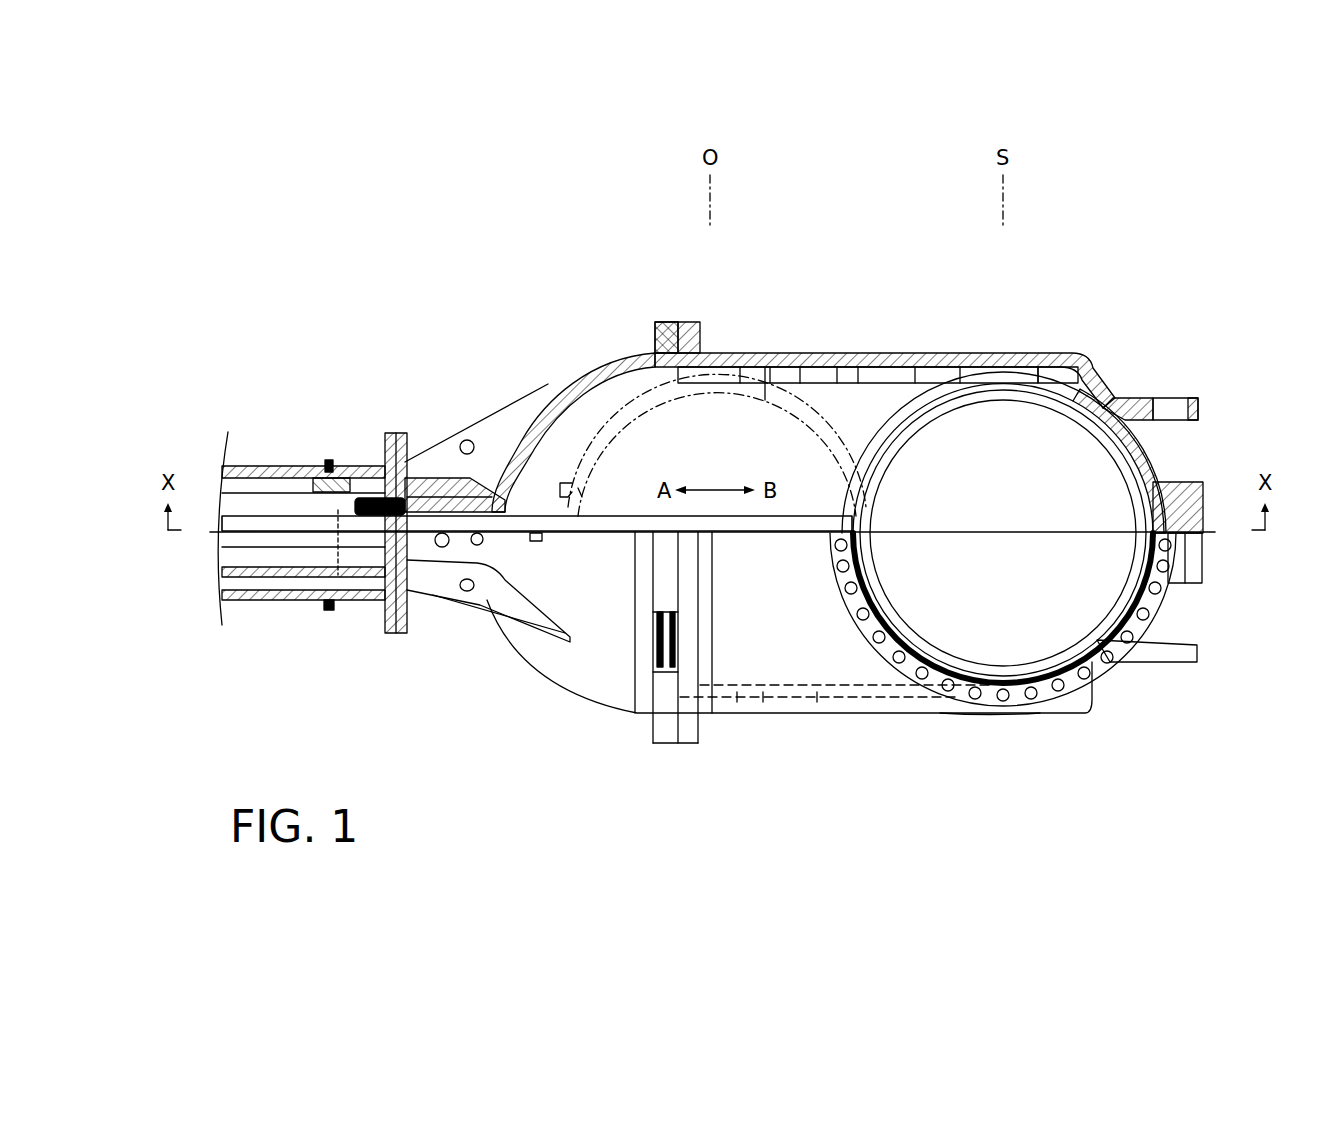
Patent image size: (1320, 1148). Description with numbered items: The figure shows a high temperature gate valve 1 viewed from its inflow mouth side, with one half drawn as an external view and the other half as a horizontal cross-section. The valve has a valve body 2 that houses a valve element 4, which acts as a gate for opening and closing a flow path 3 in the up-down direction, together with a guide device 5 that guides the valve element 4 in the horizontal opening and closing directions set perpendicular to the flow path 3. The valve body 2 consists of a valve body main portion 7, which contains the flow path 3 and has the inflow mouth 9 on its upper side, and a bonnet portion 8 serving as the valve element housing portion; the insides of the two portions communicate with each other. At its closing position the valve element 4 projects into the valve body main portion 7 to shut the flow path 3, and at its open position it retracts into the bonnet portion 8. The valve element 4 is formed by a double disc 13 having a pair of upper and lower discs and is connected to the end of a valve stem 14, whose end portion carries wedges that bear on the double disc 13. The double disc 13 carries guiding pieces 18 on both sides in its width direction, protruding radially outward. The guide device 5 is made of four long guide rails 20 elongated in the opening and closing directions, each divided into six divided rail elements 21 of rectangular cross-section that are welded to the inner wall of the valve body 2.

The high temperature gate valve 1 is at (519, 323).
The valve body 2 is at (1084, 347).
The flow path 3 is at (1013, 599).
The valve element 4 is at (598, 426).
The guide device 5 is at (793, 385).
The valve body main portion 7 is at (912, 355).
The bonnet portion 8 is at (630, 353).
The inflow mouth 9 is at (1055, 635).
The double disc 13 is at (1100, 477).
The valve stem 14 is at (596, 500).
The guiding pieces 18 is at (966, 355).
The guide rails 20 is at (860, 380).
The divided rail elements 21 is at (767, 355).